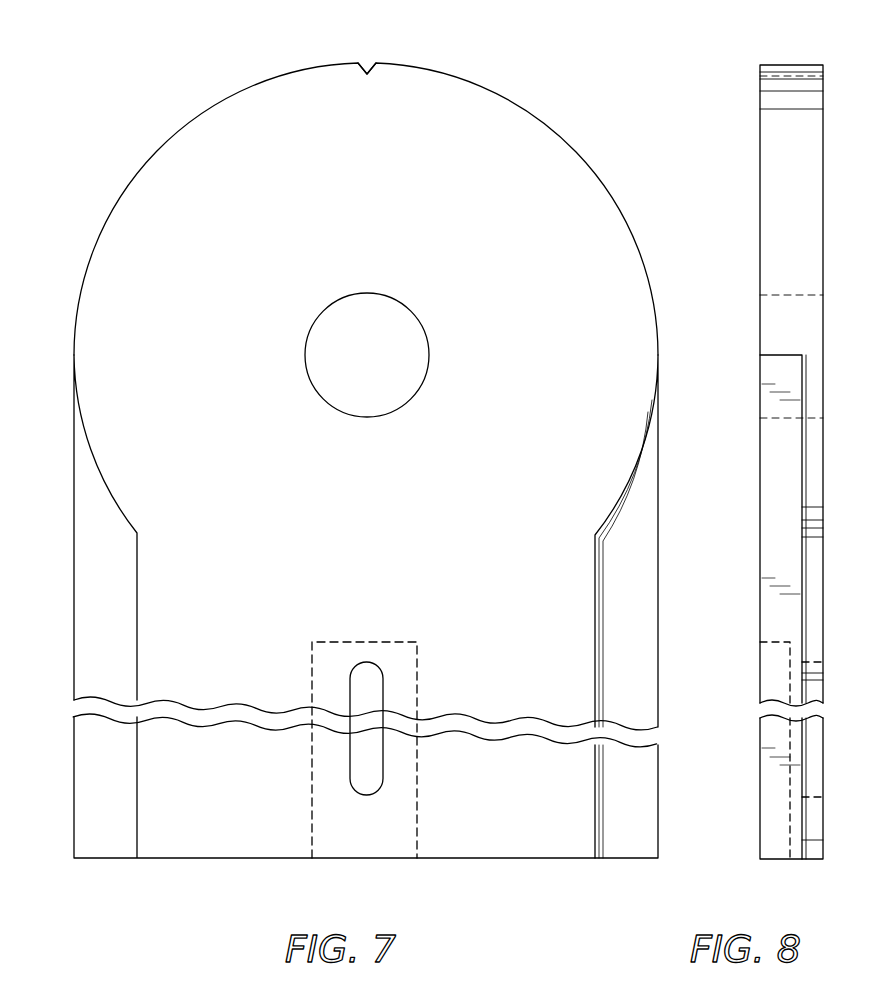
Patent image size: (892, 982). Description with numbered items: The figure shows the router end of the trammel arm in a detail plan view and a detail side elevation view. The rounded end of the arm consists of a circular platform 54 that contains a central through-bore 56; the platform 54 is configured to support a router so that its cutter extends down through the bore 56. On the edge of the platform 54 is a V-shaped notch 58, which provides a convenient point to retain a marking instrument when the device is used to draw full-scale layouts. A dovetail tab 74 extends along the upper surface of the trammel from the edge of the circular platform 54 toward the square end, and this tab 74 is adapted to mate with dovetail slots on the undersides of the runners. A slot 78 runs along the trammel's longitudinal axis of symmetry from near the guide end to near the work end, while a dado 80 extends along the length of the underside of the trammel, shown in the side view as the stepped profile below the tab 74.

In FIG. 7, the circular platform 54 is at (502, 135).
In FIG. 8, the circular platform 54 is at (823, 137).
In FIG. 7, the central through-bore 56 is at (328, 305).
In FIG. 7, the V-shaped notch 58 is at (377, 62).
In FIG. 7, the dovetail tab 74 is at (586, 620).
In FIG. 8, the dovetail tab 74 is at (823, 608).
In FIG. 7, the slot 78 is at (350, 702).
In FIG. 7, the dado 80 is at (310, 812).
In FIG. 8, the dado 80 is at (776, 805).